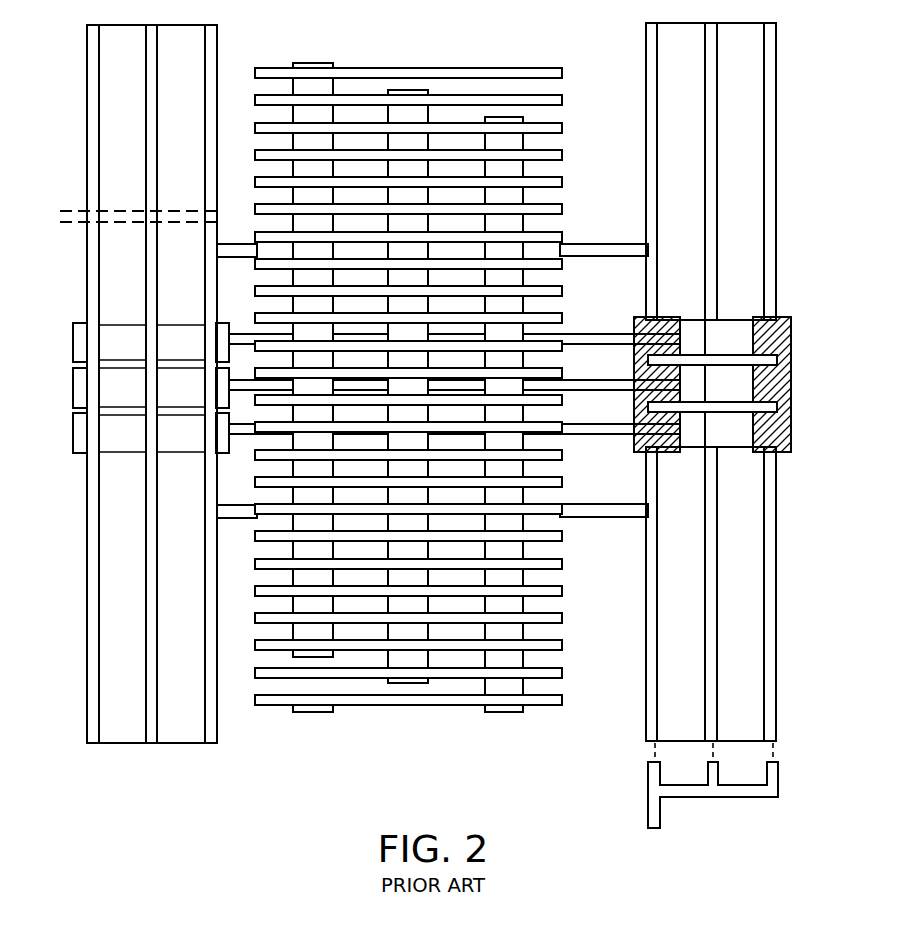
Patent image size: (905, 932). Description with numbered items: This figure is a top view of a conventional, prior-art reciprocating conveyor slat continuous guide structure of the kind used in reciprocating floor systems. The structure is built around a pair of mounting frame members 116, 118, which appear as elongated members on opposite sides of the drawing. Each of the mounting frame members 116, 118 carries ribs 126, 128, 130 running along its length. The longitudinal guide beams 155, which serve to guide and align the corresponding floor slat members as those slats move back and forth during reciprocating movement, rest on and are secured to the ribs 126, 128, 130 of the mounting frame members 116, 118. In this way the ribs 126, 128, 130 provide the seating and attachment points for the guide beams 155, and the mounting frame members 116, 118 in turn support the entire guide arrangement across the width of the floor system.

The mounting frame member 116 is at (792, 121).
The mounting frame member 118 is at (70, 126).
The rib 126 is at (95, 700).
The rib 128 is at (153, 600).
The rib 130 is at (213, 722).
The longitudinal guide beam 155 is at (167, 216).